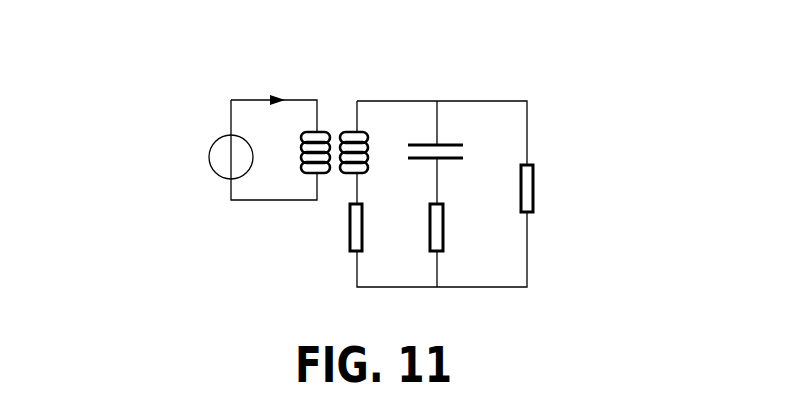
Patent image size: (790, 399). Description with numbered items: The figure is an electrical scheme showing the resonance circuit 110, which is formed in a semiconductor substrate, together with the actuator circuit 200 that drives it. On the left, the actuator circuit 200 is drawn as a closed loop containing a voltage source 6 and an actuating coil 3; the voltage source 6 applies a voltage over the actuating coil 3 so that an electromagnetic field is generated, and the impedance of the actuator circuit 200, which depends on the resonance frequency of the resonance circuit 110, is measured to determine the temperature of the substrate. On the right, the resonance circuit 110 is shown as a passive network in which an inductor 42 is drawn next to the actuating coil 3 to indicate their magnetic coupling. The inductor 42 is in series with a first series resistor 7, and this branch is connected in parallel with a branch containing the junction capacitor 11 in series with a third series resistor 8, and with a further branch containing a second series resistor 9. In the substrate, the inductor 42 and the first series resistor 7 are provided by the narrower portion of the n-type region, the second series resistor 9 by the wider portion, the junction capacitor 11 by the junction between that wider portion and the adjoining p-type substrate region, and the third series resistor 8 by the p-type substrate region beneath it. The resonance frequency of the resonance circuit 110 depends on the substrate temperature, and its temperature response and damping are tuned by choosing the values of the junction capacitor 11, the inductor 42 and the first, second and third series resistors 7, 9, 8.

The actuator circuit 200 is at (246, 66).
The resonance circuit 110 is at (504, 64).
The voltage source 6 is at (209, 157).
The actuating coil 3 is at (301, 160).
The inductor 42 is at (368, 156).
The junction capacitor 11 is at (449, 161).
The first series resistor 7 is at (348, 236).
The third series resistor 8 is at (429, 232).
The second series resistor 9 is at (536, 188).